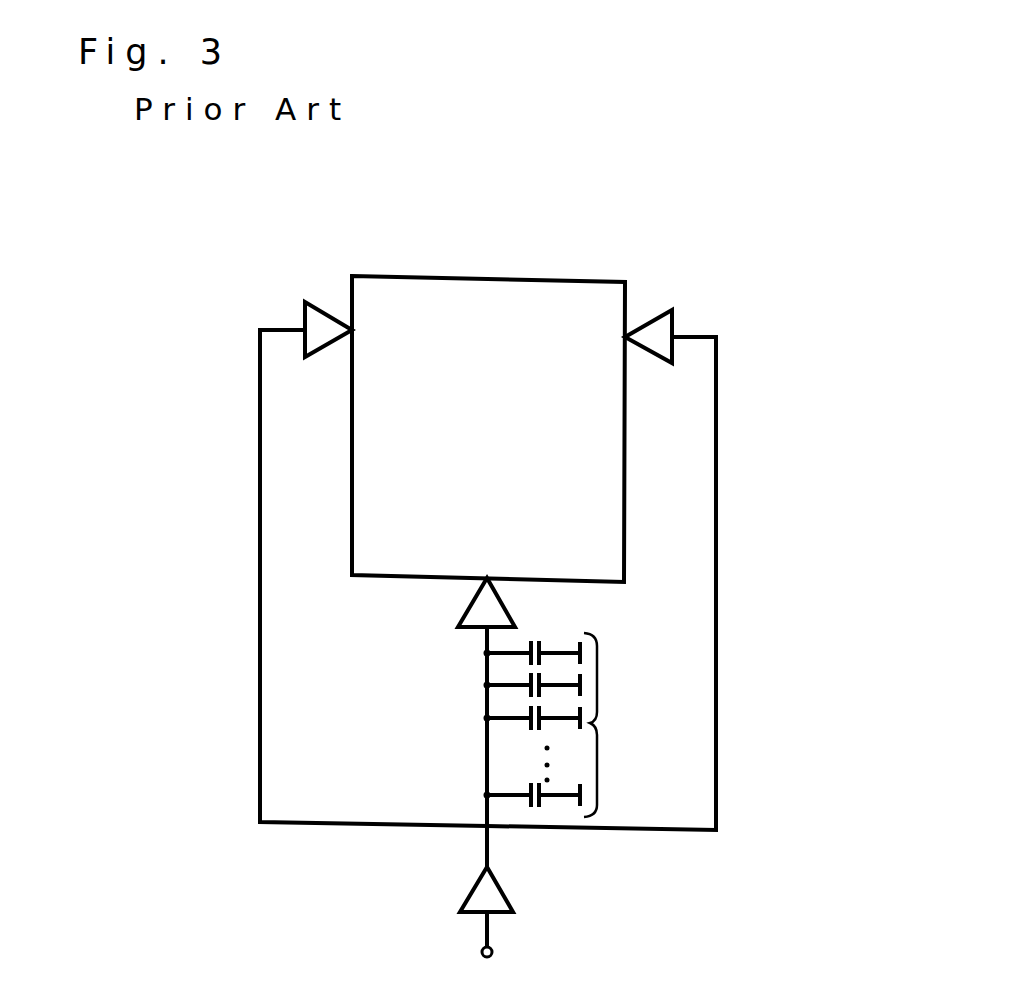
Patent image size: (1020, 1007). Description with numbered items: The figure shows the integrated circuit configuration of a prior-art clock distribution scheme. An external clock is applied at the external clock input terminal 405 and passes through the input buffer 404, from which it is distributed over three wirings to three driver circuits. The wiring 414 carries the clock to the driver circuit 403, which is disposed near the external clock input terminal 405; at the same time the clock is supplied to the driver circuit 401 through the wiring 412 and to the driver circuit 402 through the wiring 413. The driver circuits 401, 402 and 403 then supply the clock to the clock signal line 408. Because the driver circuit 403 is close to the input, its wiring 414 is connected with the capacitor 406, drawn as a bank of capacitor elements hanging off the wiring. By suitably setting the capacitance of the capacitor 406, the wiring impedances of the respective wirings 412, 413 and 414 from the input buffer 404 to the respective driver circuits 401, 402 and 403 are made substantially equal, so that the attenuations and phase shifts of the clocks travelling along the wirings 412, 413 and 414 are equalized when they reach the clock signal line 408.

The clock signal line 408 is at (500, 277).
The driver circuit 401 is at (305, 311).
The driver circuit 402 is at (672, 320).
The driver circuit 403 is at (472, 608).
The input buffer 404 is at (470, 892).
The external clock input terminal 405 is at (482, 952).
The capacitor 406 is at (598, 720).
The wiring 412 is at (260, 736).
The wiring 413 is at (716, 730).
The wiring 414 is at (485, 704).